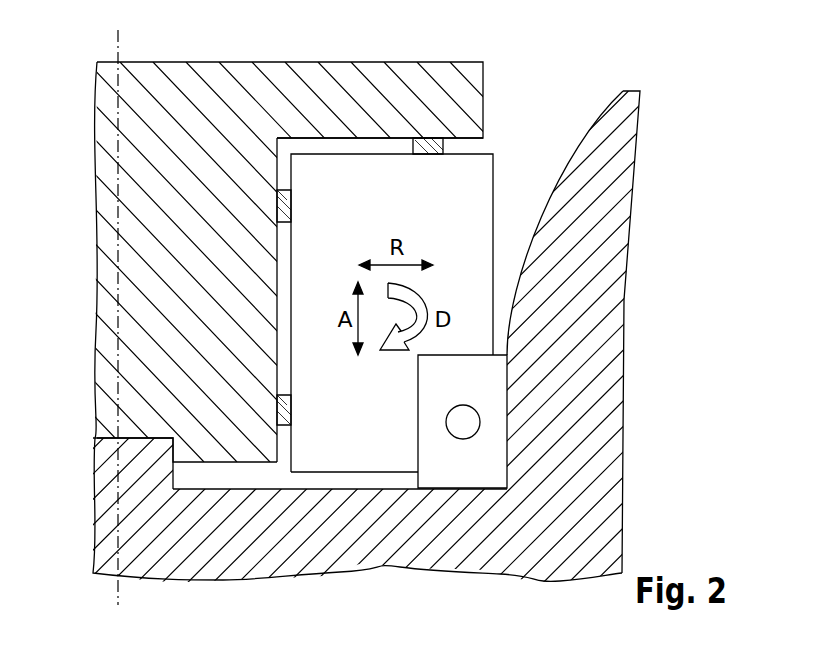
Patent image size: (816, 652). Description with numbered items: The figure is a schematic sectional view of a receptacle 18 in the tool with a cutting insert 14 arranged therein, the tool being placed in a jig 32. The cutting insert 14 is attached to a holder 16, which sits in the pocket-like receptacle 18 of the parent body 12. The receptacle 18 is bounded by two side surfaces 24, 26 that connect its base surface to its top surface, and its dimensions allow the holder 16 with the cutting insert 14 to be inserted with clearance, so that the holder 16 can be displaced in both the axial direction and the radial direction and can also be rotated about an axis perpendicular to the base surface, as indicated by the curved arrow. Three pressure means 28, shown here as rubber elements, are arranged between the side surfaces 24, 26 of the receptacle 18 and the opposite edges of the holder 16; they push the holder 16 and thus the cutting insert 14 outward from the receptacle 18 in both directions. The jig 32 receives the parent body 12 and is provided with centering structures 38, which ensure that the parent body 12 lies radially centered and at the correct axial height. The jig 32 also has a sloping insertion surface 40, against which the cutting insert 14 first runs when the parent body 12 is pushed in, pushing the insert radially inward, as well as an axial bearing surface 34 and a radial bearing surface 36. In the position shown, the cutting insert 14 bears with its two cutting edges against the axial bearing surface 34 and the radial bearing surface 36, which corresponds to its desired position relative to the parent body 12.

The parent body 12 is at (243, 76).
The cutting insert 14 is at (497, 398).
The holder 16 is at (493, 200).
The receptacle 18 is at (285, 330).
The side surface 24 is at (326, 138).
The side surface 26 is at (280, 262).
The pressure means 28 is at (430, 138).
The jig 32 is at (160, 540).
The axial bearing surface 34 is at (210, 490).
The radial bearing surface 36 is at (505, 330).
The centering structure 38 is at (105, 468).
The sloping insertion surface 40 is at (573, 160).